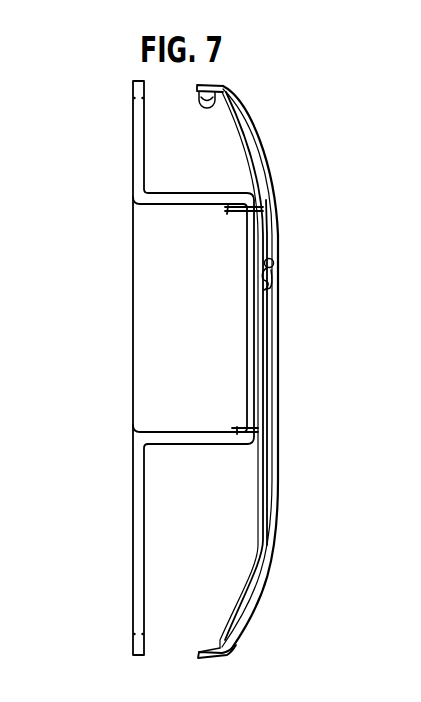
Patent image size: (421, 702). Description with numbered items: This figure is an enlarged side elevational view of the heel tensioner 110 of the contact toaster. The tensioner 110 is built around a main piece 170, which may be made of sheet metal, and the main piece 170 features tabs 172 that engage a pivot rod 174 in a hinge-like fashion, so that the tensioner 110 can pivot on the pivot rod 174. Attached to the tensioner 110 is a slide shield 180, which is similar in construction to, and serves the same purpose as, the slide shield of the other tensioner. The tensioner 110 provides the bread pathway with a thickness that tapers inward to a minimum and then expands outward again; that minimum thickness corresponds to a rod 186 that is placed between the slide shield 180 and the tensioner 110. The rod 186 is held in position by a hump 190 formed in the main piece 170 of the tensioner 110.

The tensioner 110 is at (200, 611).
The main piece 170 is at (243, 146).
The tabs 172 is at (234, 430).
The pivot rod 174 is at (146, 106).
The slide shield 180 is at (257, 627).
The rod 186 is at (270, 258).
The hump 190 is at (279, 278).